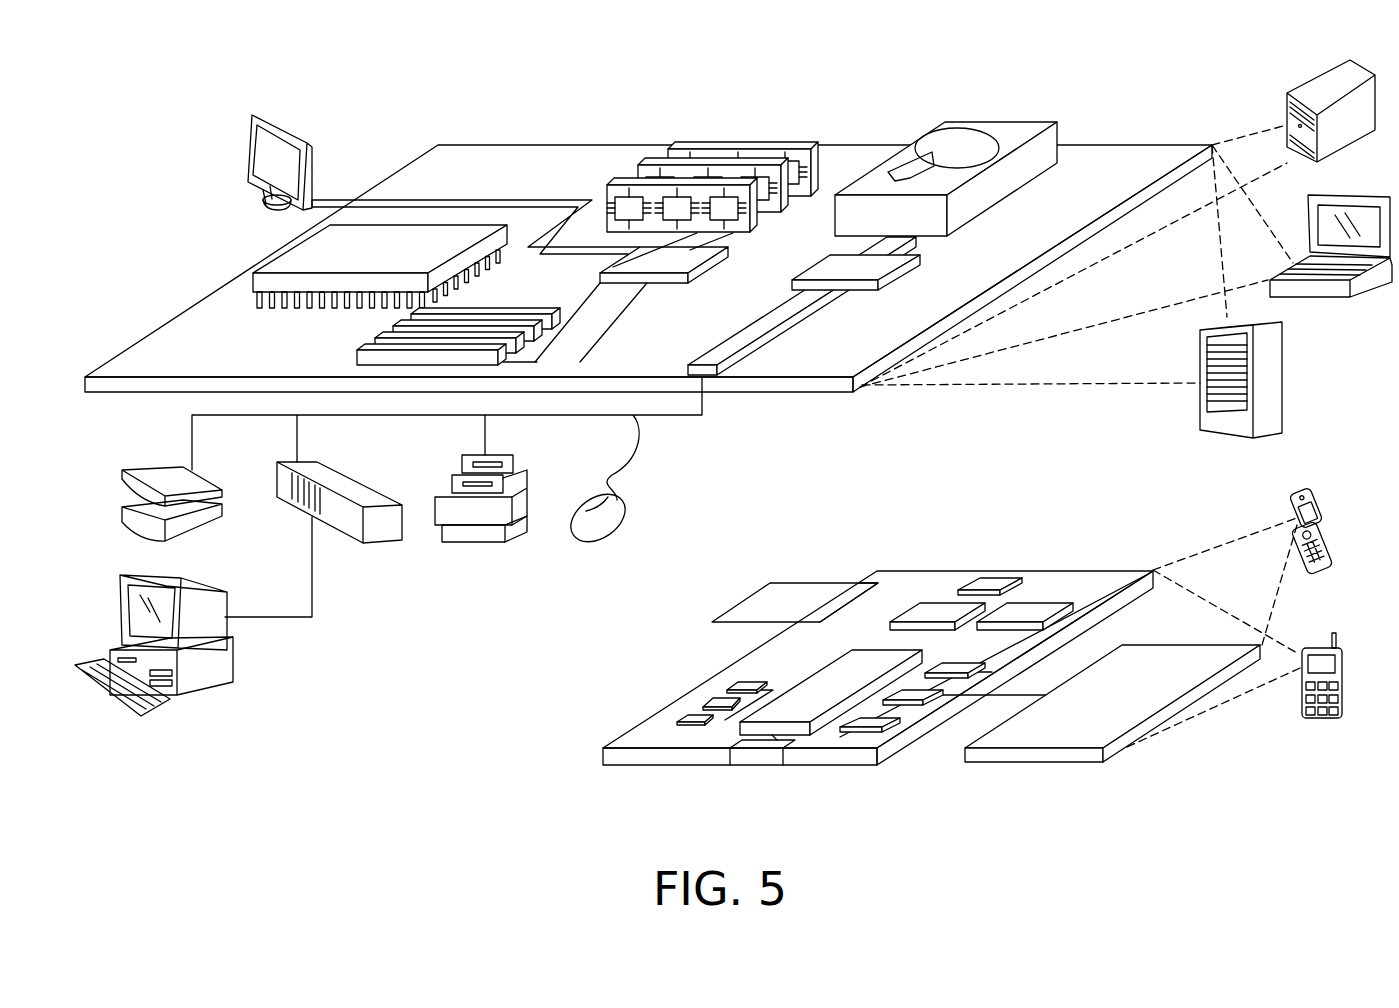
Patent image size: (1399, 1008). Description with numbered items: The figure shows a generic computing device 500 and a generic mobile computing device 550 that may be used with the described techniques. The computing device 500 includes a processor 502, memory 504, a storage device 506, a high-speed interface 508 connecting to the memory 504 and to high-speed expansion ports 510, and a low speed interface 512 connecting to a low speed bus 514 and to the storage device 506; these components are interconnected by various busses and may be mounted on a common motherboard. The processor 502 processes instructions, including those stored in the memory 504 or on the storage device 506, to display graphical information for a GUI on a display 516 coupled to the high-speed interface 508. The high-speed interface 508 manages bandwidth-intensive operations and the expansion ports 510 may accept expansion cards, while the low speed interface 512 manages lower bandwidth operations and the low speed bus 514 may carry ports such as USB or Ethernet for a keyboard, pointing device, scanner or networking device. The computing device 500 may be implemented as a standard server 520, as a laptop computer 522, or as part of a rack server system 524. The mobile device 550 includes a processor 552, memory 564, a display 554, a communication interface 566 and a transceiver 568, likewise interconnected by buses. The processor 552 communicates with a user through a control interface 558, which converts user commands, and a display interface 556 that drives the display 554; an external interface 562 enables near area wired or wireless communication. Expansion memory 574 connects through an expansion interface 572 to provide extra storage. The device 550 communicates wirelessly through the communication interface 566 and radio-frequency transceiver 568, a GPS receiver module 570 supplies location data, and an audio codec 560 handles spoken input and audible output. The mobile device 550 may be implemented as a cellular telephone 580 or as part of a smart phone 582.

The computing device 500 is at (390, 86).
The processor 502 is at (280, 254).
The memory 504 is at (748, 138).
The storage device 506 is at (987, 120).
The high-speed interface 508 is at (673, 258).
The high-speed expansion ports 510 is at (380, 333).
The low speed interface 512 is at (827, 263).
The low speed bus 514 is at (710, 358).
The display 516 is at (254, 112).
The standard server 520 is at (1308, 88).
The laptop computer 522 is at (1368, 192).
The rack server system 524 is at (1283, 377).
The mobile computer device 550 is at (553, 777).
The processor 552 is at (797, 695).
The display 554 is at (1157, 663).
The display interface 556 is at (880, 723).
The control interface 558 is at (920, 695).
The audio codec 560 is at (962, 665).
The external interface 562 is at (757, 750).
The memory 564 is at (707, 703).
The communication interface 566 is at (937, 605).
The transceiver 568 is at (1032, 607).
The GPS receiver module 570 is at (992, 582).
The expansion interface 572 is at (857, 583).
The expansion memory 574 is at (772, 582).
The cellular telephone 580 is at (1305, 492).
The smart phone 582 is at (1318, 647).